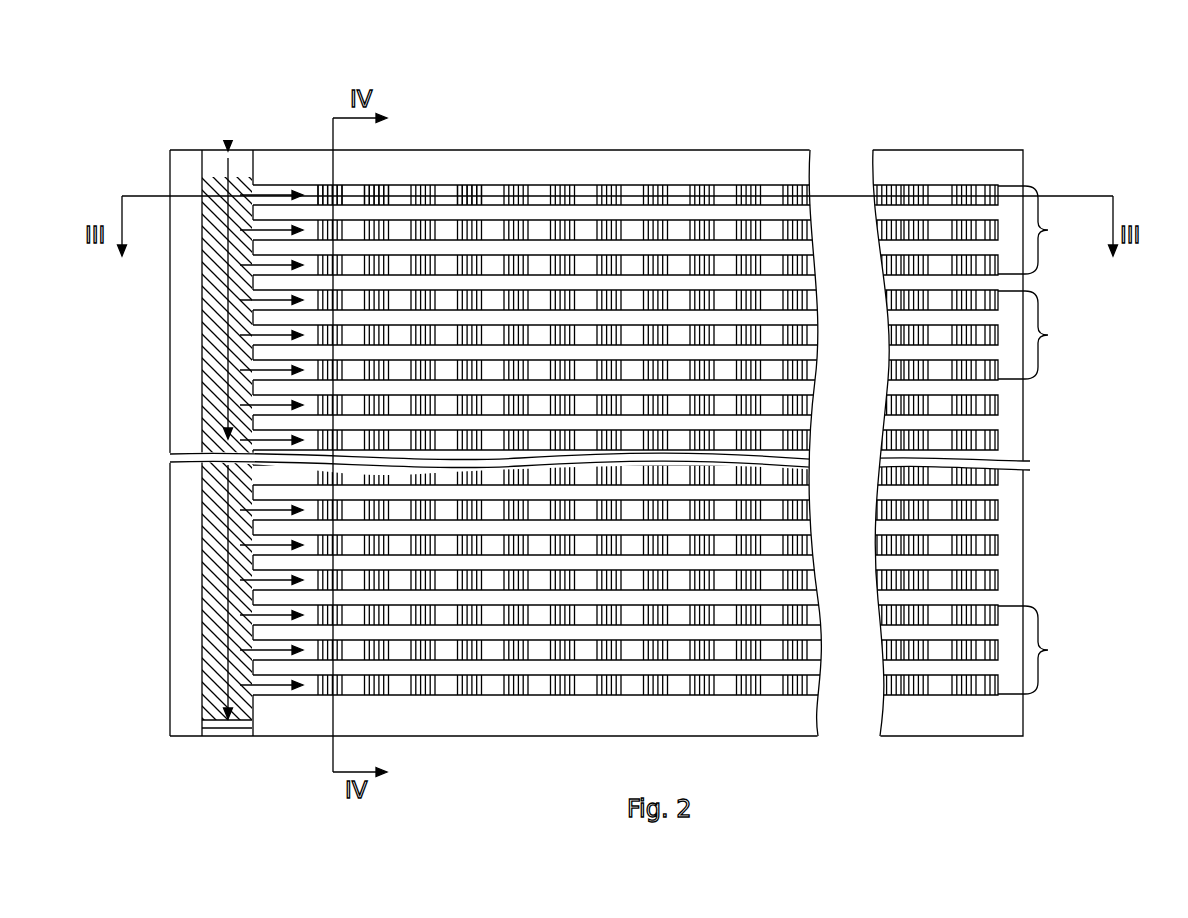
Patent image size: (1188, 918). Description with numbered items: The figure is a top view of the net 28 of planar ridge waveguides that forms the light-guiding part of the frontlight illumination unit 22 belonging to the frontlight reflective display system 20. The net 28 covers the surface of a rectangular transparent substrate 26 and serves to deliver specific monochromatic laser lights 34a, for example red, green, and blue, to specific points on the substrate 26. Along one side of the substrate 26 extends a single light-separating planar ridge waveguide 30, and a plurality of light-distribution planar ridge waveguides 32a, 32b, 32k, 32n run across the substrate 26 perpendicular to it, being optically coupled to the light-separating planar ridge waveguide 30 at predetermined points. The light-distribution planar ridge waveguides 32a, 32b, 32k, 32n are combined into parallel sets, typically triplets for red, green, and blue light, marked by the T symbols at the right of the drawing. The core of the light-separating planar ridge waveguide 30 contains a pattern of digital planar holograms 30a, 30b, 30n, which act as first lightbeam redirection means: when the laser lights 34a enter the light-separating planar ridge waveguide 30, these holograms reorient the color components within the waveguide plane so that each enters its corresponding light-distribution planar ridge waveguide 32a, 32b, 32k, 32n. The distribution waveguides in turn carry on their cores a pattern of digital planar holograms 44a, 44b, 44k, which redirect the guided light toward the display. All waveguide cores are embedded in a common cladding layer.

The frontlight reflective display system 20 is at (637, 415).
The frontlight illumination unit 22 is at (470, 415).
The rectangular transparent substrate 26 is at (922, 170).
The net of planar ridge waveguides 28 is at (670, 256).
The light-separating planar ridge waveguide 30 is at (179, 402).
The digital planar hologram 30a is at (210, 205).
The digital planar hologram 30b is at (205, 232).
The digital planar hologram 30n is at (205, 692).
The light-distribution planar ridge waveguide 32a is at (300, 187).
The light-distribution planar ridge waveguide 32b is at (497, 218).
The light-distribution planar ridge waveguide 32k is at (302, 308).
The light-distribution planar ridge waveguide 32n is at (497, 698).
The laser lights 34a is at (228, 97).
The digital planar hologram 44a is at (323, 185).
The digital planar hologram 44b is at (383, 188).
The digital planar hologram 44k is at (462, 188).